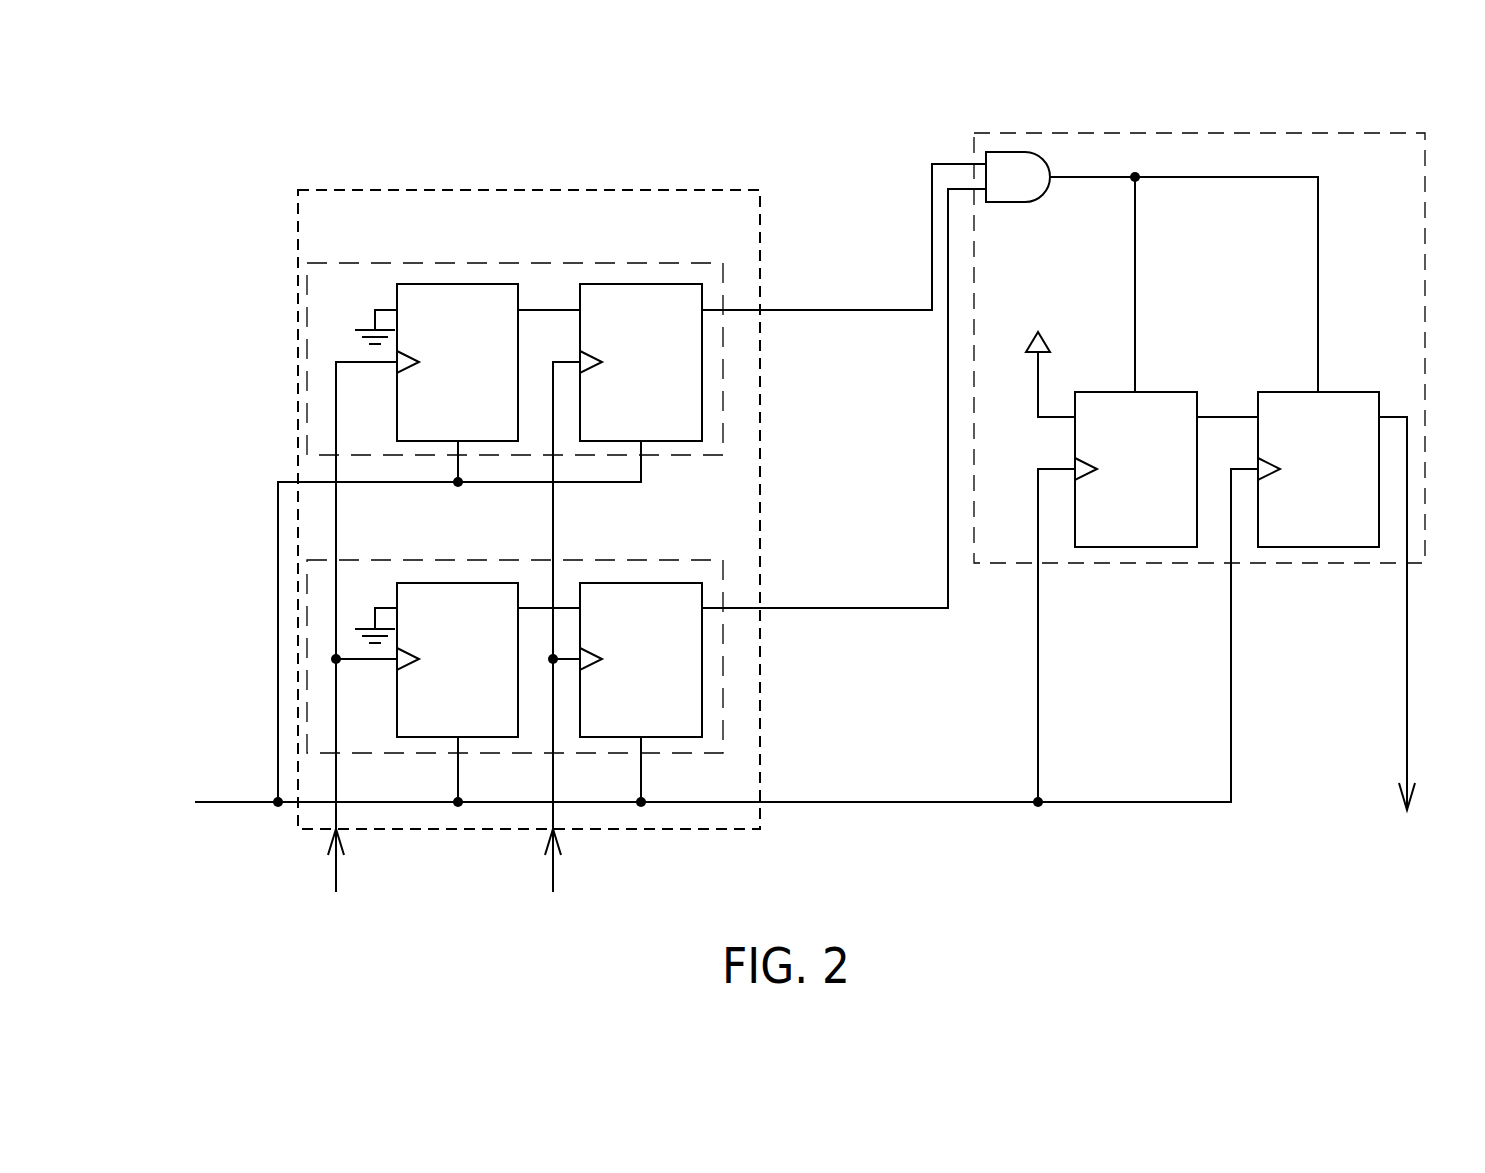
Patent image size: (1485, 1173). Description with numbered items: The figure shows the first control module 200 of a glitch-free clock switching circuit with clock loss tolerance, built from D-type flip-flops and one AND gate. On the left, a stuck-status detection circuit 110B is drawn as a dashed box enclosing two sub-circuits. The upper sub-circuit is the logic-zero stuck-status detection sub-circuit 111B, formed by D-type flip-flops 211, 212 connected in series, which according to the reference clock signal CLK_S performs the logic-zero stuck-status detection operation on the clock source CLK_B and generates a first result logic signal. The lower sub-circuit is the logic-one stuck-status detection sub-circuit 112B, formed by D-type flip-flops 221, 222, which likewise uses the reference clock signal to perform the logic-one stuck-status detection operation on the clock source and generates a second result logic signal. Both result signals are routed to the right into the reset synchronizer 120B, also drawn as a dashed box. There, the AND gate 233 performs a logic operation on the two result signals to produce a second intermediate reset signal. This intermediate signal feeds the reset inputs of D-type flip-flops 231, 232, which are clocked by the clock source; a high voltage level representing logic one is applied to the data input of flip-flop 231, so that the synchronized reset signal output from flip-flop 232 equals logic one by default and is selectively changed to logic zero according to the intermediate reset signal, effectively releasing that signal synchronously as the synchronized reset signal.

The first control module 200 is at (215, 108).
The stuck-status detection circuit 110B is at (722, 188).
The logic 0 stuck-status detection sub-circuit 111B is at (670, 263).
The logic 1 stuck-status detection sub-circuit 112B is at (670, 560).
The reset synchronizer 120B is at (1375, 133).
The D-type flip-flop 211 is at (490, 284).
The D-type flip-flop 212 is at (605, 284).
The D-type flip-flop 221 is at (490, 583).
The D-type flip-flop 222 is at (605, 583).
The D-type flip-flop 231 is at (1172, 392).
The D-type flip-flop 232 is at (1357, 392).
The AND gate 233 is at (1005, 152).